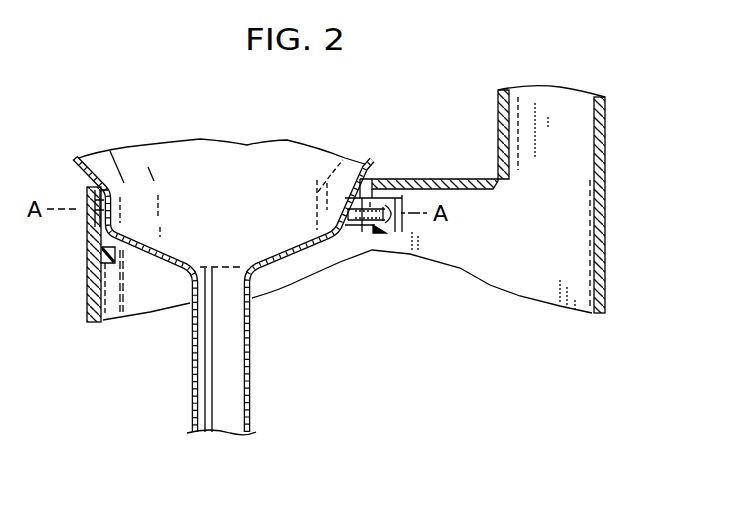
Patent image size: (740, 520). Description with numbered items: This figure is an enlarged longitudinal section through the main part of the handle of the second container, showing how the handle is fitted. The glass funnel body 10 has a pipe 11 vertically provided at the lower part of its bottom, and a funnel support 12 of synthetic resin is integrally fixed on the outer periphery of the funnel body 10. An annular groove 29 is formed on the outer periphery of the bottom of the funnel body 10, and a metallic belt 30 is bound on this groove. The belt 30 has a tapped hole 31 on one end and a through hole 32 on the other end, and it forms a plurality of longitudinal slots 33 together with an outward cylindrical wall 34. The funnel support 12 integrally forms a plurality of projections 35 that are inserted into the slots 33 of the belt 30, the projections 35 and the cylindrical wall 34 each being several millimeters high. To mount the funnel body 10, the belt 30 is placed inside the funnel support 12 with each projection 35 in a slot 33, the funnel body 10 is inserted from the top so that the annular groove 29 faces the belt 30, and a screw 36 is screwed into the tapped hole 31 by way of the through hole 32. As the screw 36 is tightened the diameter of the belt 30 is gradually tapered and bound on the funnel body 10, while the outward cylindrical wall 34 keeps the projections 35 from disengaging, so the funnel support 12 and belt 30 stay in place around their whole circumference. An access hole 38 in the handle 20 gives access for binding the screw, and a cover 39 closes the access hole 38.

The funnel body 10 is at (103, 187).
The pipe 11 is at (252, 398).
The funnel support 12 is at (87, 295).
The handle 20 is at (603, 113).
The annular groove 29 is at (347, 223).
The belt 30 is at (358, 226).
The tapped hole 31 is at (379, 177).
The through hole 32 is at (374, 234).
The slots 33 is at (110, 207).
The outward cylindrical wall 34 is at (87, 250).
The projections 35 is at (90, 213).
The screw 36 is at (390, 193).
The access hole 38 is at (604, 230).
The cover 39 is at (604, 212).